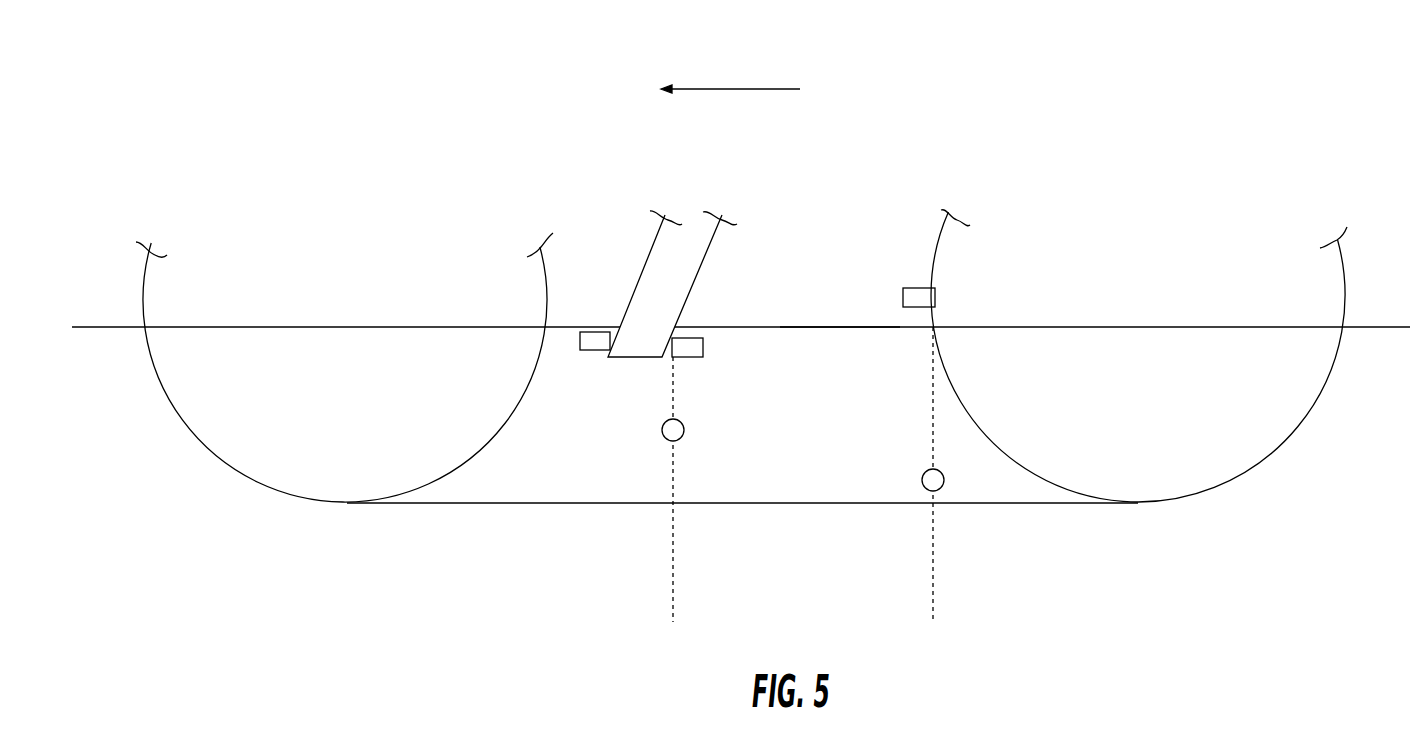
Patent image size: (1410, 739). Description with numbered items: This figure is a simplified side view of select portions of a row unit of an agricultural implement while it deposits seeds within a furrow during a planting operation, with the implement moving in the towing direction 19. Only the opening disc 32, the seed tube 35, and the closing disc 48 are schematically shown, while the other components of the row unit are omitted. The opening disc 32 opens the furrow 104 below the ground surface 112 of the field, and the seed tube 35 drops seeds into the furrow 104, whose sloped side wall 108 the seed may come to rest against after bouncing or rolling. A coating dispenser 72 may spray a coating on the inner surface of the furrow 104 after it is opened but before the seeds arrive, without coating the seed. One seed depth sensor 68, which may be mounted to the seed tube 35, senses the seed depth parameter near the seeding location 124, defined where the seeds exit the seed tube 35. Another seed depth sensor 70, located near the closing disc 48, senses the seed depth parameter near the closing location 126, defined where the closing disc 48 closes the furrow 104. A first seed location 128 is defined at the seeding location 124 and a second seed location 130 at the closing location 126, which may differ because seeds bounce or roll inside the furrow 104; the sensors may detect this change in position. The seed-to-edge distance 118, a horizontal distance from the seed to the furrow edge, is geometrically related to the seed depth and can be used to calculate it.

The towing direction 19 is at (730, 89).
The opening disc 32 is at (200, 443).
The seed tube 35 is at (648, 263).
The closing disc 48 is at (1277, 447).
The seed depth sensor 68 is at (692, 337).
The seed depth sensor 70 is at (922, 288).
The coating dispenser 72 is at (595, 331).
The furrow 104 is at (813, 326).
The side wall 108 is at (717, 407).
The ground surface 112 is at (107, 327).
The seed-to-edge distance 118 is at (510, 503).
The seeding location 124 is at (673, 593).
The closing location 126 is at (933, 593).
The first seed location 128 is at (662, 428).
The second seed location 130 is at (923, 476).